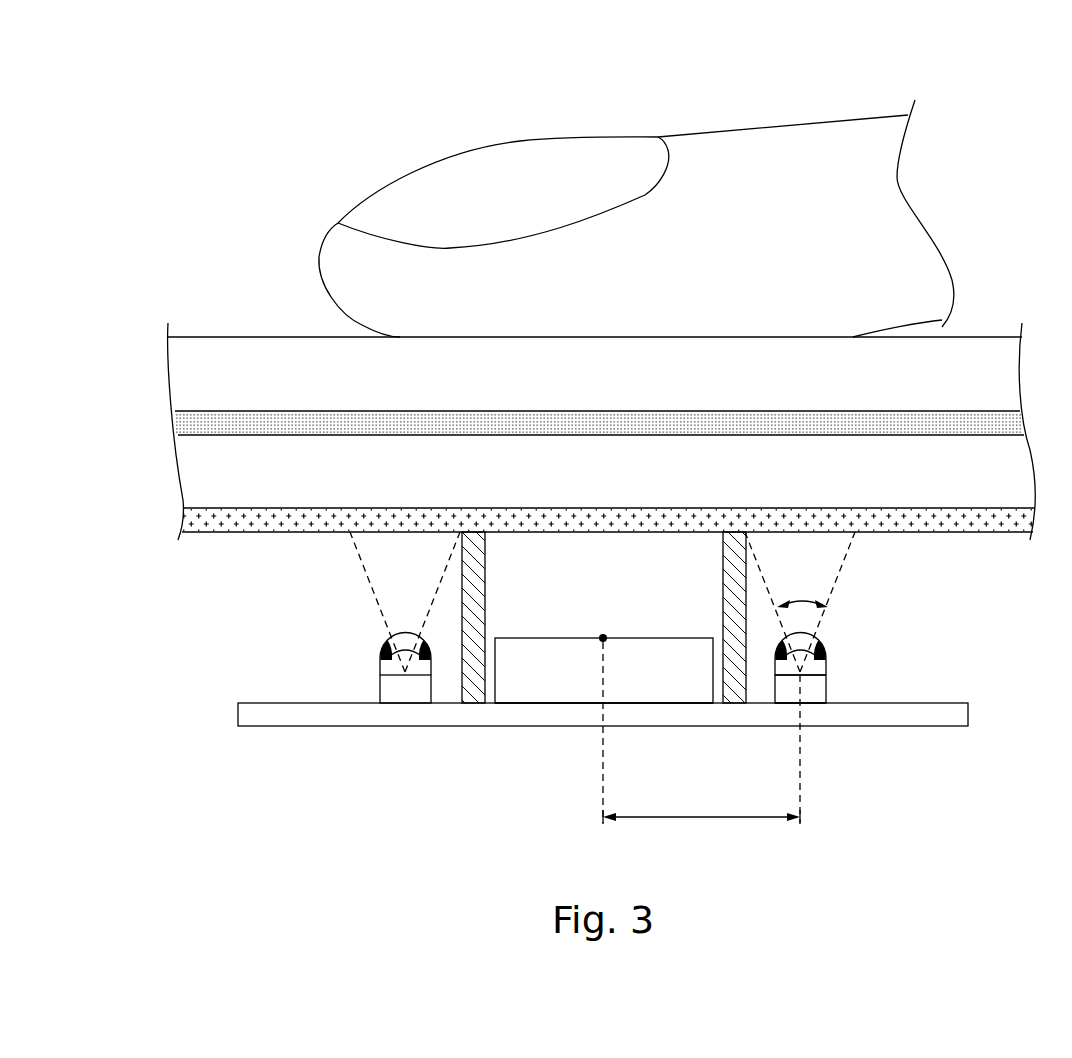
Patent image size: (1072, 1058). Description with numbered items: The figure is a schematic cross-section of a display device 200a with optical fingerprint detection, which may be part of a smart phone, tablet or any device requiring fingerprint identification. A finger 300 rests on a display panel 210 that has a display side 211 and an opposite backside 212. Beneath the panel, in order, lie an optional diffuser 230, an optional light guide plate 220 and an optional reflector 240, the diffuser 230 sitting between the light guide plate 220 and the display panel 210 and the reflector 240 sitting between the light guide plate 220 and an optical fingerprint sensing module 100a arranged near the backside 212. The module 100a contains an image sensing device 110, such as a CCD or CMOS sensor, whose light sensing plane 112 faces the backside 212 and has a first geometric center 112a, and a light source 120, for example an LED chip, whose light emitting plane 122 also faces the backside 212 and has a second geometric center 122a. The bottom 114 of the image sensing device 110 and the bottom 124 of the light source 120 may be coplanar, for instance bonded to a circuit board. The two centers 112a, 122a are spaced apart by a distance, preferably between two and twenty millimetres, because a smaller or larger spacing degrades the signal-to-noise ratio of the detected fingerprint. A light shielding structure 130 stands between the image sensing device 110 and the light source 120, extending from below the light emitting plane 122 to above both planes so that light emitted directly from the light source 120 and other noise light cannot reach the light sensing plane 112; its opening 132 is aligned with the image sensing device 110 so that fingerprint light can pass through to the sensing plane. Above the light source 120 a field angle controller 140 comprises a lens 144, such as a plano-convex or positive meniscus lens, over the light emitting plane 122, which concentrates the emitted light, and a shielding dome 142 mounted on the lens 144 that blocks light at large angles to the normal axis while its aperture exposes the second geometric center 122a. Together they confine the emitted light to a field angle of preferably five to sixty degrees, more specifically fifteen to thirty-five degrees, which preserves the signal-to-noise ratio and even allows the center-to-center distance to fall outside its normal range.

The optical fingerprint sensing module 100a is at (198, 634).
The image sensing device 110 is at (513, 695).
The light sensing plane 112 is at (553, 650).
The first geometric center 112a is at (601, 644).
The bottom of the image sensing device 114 is at (515, 725).
The light source 120 is at (873, 677).
The light emitting plane 122 is at (792, 680).
The second geometric center 122a is at (826, 679).
The bottom of the light source 124 is at (808, 703).
The light shielding structure 130 is at (737, 697).
The opening 132 is at (500, 588).
The field angle controller 140 is at (891, 627).
The shielding dome 142 is at (825, 652).
The lens 144 is at (825, 667).
The display device 200a is at (98, 58).
The display panel 210 is at (553, 331).
The display side 211 is at (273, 338).
The backside 212 is at (214, 412).
The light guide plate 220 is at (197, 473).
The diffuser 230 is at (182, 423).
The reflector 240 is at (192, 515).
The finger 300 is at (738, 150).